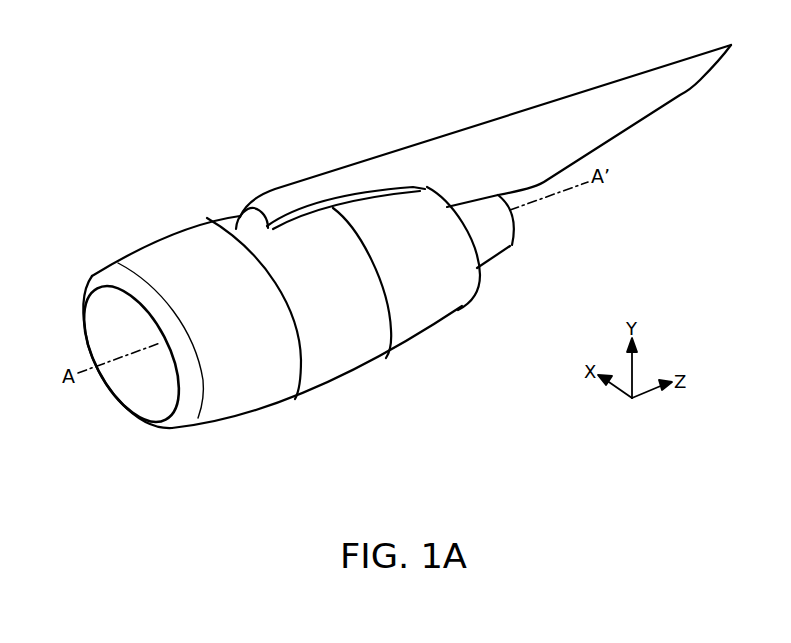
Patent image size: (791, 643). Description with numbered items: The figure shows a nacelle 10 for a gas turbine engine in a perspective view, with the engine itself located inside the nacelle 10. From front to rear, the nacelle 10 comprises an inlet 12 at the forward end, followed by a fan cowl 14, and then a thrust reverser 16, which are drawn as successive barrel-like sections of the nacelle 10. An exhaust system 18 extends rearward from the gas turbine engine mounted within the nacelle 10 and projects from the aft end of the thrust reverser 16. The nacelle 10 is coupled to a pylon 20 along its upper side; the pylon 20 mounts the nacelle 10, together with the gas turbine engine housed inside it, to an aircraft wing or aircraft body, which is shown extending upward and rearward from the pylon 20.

The nacelle 10 is at (164, 93).
The inlet 12 is at (149, 262).
The fan cowl 14 is at (367, 352).
The thrust reverser 16 is at (431, 311).
The exhaust system 18 is at (498, 237).
The pylon 20 is at (431, 150).